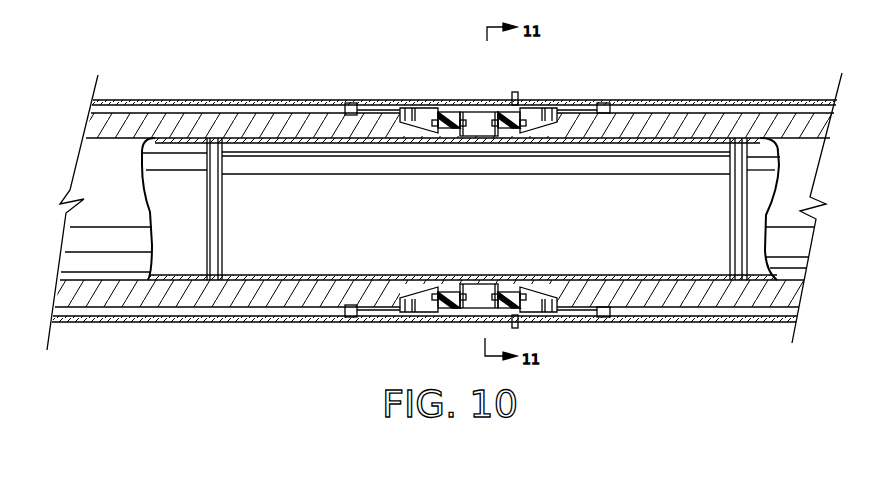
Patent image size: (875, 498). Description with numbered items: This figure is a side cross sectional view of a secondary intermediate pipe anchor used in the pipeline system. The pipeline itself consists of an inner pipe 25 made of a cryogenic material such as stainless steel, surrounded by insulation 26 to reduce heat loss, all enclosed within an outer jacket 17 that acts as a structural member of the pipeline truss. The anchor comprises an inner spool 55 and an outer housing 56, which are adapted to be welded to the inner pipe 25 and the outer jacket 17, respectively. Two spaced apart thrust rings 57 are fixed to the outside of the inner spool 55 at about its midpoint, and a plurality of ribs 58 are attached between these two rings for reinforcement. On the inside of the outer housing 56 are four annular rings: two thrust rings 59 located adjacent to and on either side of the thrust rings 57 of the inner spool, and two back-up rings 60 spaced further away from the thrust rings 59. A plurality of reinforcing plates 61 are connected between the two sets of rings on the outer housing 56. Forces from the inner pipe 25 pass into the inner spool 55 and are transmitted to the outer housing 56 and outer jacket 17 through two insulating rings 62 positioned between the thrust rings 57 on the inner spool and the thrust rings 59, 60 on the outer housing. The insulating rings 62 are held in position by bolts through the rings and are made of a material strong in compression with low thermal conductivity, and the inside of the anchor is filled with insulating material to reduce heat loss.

The outer jacket 17 is at (732, 101).
The inner pipe 25 is at (797, 143).
The insulation 26 is at (668, 121).
The inner spool 55 is at (607, 143).
The outer housing 56 is at (600, 105).
The thrust rings 57 is at (462, 133).
The ribs 58 is at (477, 136).
The thrust rings 59 is at (437, 112).
The back-up rings 60 is at (397, 103).
The reinforcing plates 61 is at (418, 110).
The insulating rings 62 is at (453, 129).